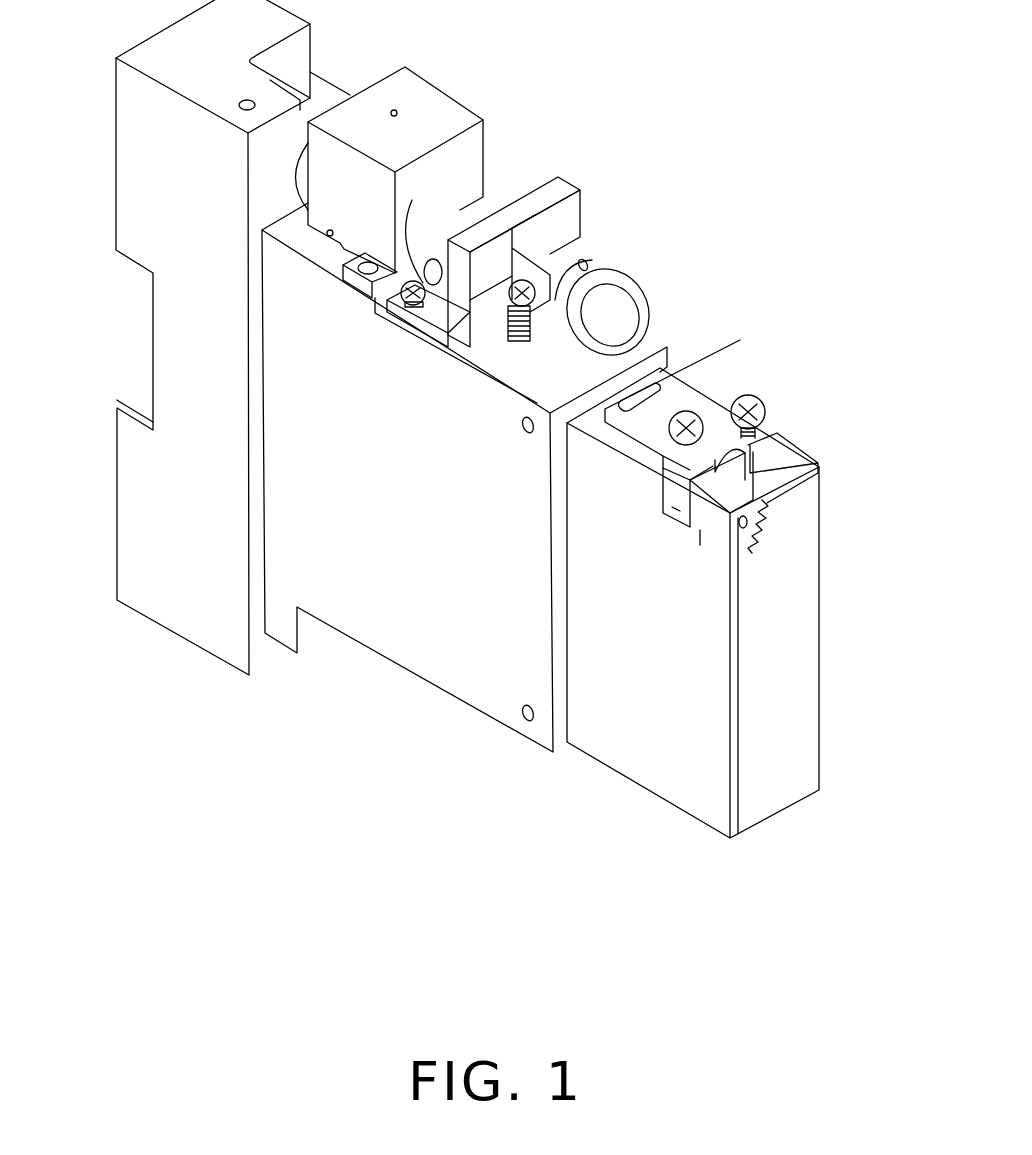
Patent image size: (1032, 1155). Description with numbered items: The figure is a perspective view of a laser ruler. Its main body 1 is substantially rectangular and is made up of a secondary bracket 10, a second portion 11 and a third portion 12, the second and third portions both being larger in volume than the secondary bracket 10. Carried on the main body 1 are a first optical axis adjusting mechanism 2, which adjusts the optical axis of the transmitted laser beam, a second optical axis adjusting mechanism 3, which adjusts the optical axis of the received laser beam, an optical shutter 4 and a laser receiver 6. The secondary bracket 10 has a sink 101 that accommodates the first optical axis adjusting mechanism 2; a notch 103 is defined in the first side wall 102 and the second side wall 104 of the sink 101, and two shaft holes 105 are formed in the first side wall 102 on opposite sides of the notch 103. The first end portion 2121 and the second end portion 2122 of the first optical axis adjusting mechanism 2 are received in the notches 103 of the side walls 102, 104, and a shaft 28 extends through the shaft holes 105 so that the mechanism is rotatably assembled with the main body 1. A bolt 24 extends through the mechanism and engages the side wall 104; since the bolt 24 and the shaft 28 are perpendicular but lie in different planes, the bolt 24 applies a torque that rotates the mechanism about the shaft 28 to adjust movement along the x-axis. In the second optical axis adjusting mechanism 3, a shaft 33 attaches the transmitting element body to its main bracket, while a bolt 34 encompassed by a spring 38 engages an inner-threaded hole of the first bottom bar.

The main body 1 is at (189, 368).
The first optical axis adjusting mechanism 2 is at (754, 488).
The second optical axis adjusting mechanism 3 is at (612, 268).
The optical shutter 4 is at (420, 100).
The laser receiver 6 is at (666, 370).
The secondary bracket 10 is at (633, 735).
The second portion 11 is at (420, 640).
The third portion 12 is at (197, 607).
The bolt 24 is at (760, 405).
The shaft 28 is at (757, 520).
The shaft 33 is at (590, 252).
The bolt 34 is at (515, 330).
The spring 38 is at (530, 308).
The sink 101 is at (773, 483).
The first side wall 102 is at (757, 505).
The notch 103 is at (690, 540).
The second side wall 104 is at (780, 462).
The shaft holes 105 is at (757, 537).
The first end portion 2121 is at (677, 490).
The second end portion 2122 is at (778, 452).